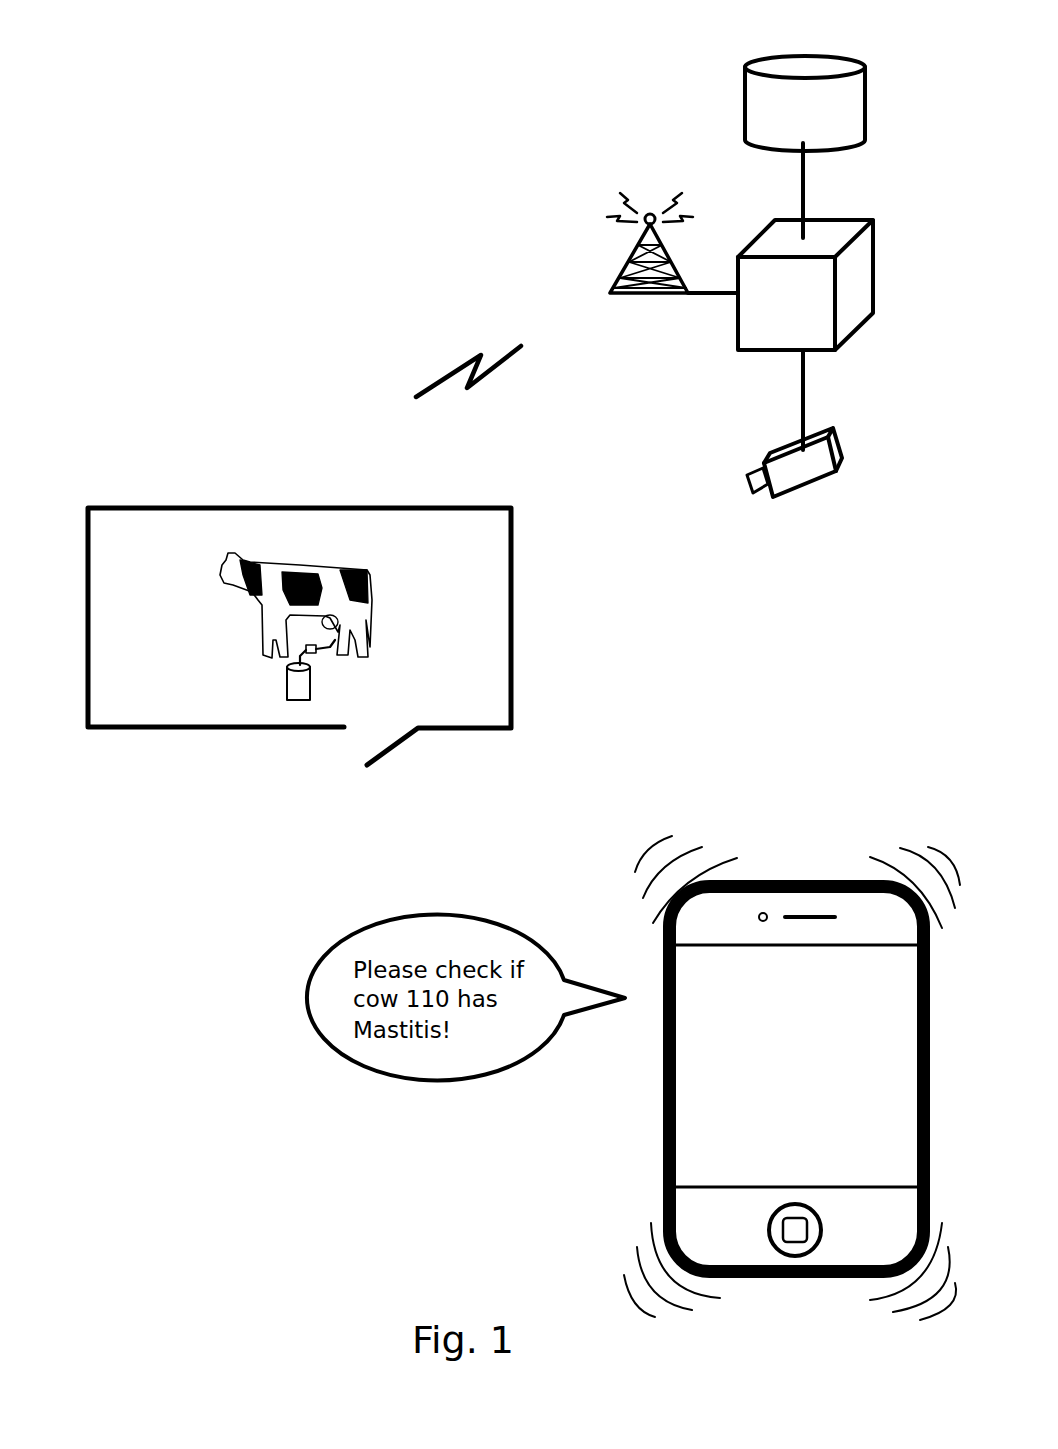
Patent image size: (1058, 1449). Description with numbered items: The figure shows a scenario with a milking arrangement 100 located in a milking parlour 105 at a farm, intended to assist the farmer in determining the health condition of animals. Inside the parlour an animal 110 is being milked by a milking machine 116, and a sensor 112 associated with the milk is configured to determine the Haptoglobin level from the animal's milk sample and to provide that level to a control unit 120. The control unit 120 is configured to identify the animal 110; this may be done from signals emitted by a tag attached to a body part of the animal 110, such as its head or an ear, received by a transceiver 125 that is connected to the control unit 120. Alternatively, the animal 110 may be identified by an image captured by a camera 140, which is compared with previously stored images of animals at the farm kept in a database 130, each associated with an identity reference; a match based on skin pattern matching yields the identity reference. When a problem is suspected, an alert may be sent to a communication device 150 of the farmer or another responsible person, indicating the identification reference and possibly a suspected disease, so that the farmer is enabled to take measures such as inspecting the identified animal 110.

The milking arrangement 100 is at (80, 54).
The milking parlour 105 is at (470, 632).
The animal 110 is at (275, 575).
The sensor 112 is at (298, 655).
The milking machine 116 is at (292, 685).
The control unit 120 is at (763, 315).
The transceiver 125 is at (650, 214).
The database 130 is at (845, 100).
The camera/video camera 140 is at (792, 473).
The communication device 150 is at (775, 878).